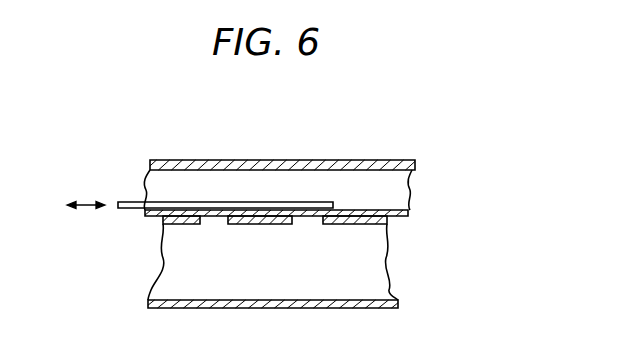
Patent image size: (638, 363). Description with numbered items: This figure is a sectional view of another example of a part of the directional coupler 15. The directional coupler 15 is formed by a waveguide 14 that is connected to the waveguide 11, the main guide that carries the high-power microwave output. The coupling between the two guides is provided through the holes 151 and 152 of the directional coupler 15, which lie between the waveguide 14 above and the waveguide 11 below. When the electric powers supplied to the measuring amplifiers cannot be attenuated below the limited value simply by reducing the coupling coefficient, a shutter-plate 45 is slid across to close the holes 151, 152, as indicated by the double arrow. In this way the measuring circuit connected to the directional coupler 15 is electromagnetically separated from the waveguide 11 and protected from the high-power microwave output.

The waveguide 14 is at (393, 178).
The directional coupler 15 is at (415, 216).
The hole 151 is at (210, 225).
The hole 152 is at (300, 225).
The shutter-plate 45 is at (133, 205).
The waveguide 11 is at (383, 287).